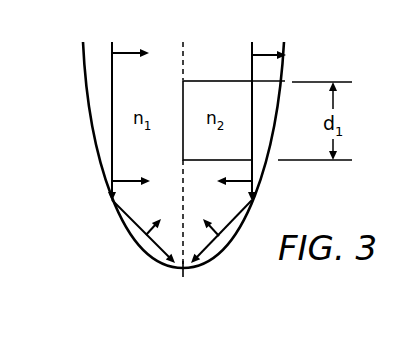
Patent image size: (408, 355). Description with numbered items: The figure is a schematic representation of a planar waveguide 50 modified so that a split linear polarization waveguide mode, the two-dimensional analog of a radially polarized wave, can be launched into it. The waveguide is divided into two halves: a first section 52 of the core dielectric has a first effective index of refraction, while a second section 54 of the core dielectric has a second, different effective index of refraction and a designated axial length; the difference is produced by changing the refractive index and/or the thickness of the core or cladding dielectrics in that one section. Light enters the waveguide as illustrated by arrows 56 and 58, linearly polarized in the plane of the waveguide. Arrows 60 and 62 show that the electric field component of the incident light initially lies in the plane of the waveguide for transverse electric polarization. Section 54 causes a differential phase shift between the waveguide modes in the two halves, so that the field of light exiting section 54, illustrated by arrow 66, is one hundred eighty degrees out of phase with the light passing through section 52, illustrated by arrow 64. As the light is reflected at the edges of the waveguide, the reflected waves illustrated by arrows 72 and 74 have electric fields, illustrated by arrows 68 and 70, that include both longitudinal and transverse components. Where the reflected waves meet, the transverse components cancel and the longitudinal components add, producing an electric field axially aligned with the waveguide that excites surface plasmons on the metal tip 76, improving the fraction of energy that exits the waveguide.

The planar waveguide 50 is at (203, 60).
The first section of the core dielectric 52 is at (95, 110).
The second section of the core dielectric 54 is at (274, 118).
The arrow illustrating light entering the waveguide 56 is at (252, 73).
The arrow illustrating light entering the waveguide 58 is at (112, 78).
The arrow illustrating the electric field of the incident light 60 is at (262, 53).
The arrow illustrating the electric field of the incident light 62 is at (126, 51).
The arrow illustrating the electric field of light passing through the first section 64 is at (127, 181).
The arrow illustrating the electric field of light exiting the second section 66 is at (228, 180).
The arrow illustrating the electric field of a reflected wave 68 is at (214, 229).
The arrow illustrating the electric field of a reflected wave 70 is at (149, 228).
The reflected wave 72 is at (212, 253).
The reflected wave 74 is at (153, 251).
The metal tip 76 is at (187, 278).